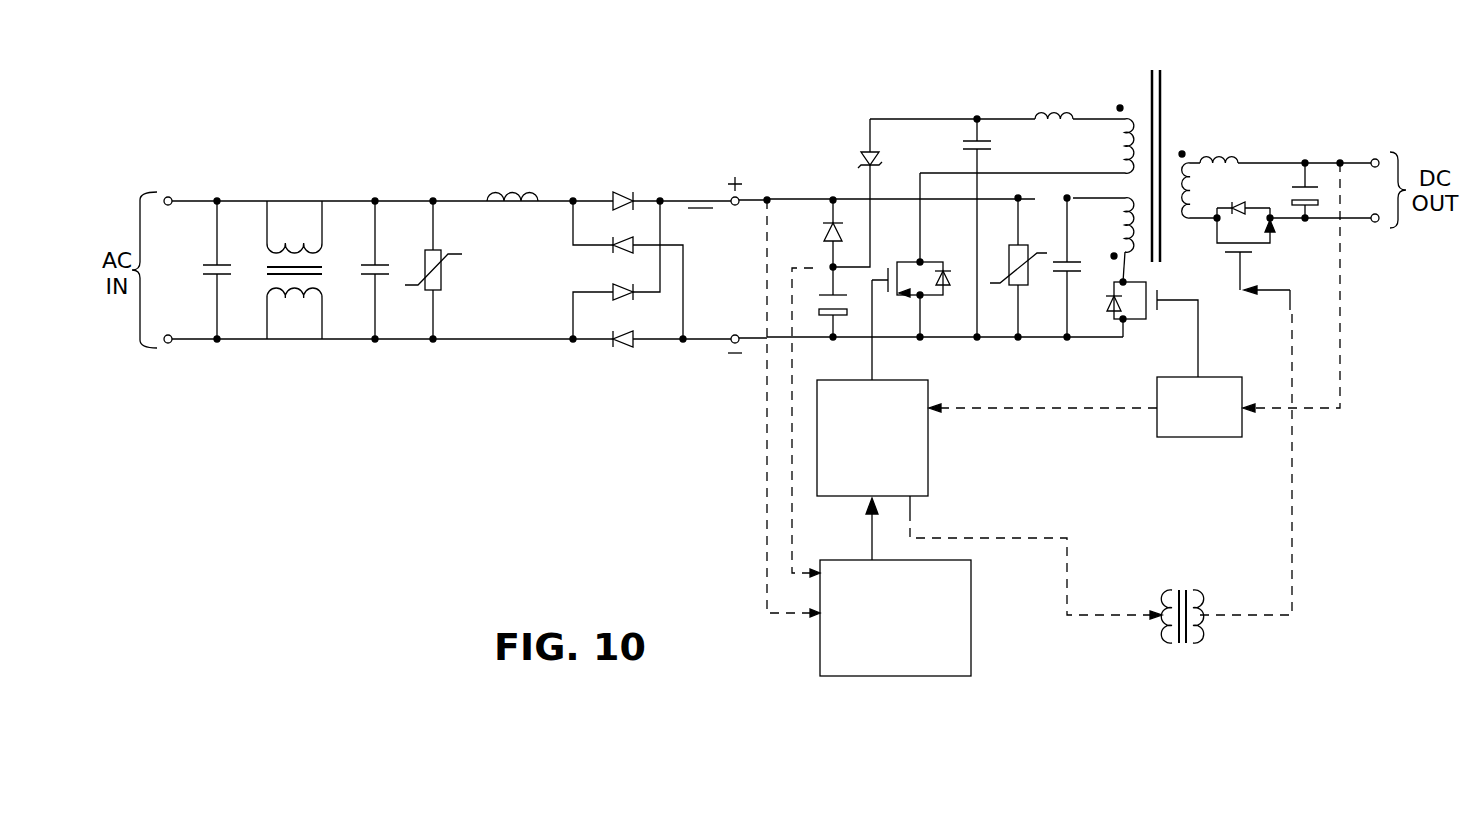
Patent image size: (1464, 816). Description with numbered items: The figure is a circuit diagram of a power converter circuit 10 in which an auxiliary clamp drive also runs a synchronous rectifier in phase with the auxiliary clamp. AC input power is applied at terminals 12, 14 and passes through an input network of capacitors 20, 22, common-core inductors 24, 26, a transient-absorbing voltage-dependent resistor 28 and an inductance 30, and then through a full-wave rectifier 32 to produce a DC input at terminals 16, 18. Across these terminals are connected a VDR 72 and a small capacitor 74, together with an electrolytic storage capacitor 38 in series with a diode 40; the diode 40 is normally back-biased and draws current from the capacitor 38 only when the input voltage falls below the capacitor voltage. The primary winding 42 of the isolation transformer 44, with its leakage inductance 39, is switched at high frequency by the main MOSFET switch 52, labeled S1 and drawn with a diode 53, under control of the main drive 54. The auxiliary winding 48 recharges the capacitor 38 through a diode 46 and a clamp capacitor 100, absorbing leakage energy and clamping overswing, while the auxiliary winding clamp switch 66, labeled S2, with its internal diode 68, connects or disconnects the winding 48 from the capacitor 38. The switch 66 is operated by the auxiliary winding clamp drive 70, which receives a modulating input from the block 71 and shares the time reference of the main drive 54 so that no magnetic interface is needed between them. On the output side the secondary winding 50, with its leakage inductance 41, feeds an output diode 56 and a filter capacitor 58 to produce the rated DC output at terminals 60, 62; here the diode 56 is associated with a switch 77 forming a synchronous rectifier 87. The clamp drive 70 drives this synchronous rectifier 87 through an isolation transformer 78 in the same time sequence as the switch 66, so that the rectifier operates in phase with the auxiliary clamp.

The circuit 10 is at (886, 98).
The terminal 12 is at (169, 196).
The terminal 14 is at (168, 344).
The terminal 16 is at (735, 206).
The terminal 18 is at (735, 334).
The capacitor 20 is at (203, 273).
The capacitor 22 is at (365, 273).
The common-core inductor 24 is at (295, 237).
The common-core inductor 26 is at (295, 304).
The transient-absorbing voltage-dependent resistor 28 is at (445, 283).
The inductance 30 is at (512, 192).
The full-wave rectifier 32 is at (632, 183).
The storage capacitor 38 is at (822, 318).
The leakage inductance 39 is at (1059, 113).
The diode 40 is at (823, 233).
The leakage inductance 41 is at (1215, 158).
The primary winding 42 is at (1120, 208).
The isolation transformer 44 is at (1176, 66).
The diode 46 is at (882, 160).
The auxiliary winding 48 is at (1120, 130).
The secondary winding 50 is at (1196, 183).
The MOSFET switch 52 is at (1147, 320).
The body diode of main switch 53 is at (1110, 322).
The main drive 54 is at (1212, 438).
The diode 56 is at (1248, 207).
The capacitor 58 is at (1313, 185).
The terminal 60 is at (1378, 158).
The terminal 62 is at (1378, 223).
The auxiliary winding clamp switch 66 is at (908, 261).
The internal diode 68 is at (943, 266).
The auxiliary winding clamp drive 70 is at (930, 447).
The modulate aux clamp drive circuit 71 is at (968, 659).
The VDR 72 is at (1025, 291).
The small capacitor 74 is at (1072, 280).
The synchronous rectifier switch 77 is at (1262, 246).
The isolation transformer 78 is at (1183, 648).
The synchronous rectifier 87 is at (1244, 272).
The clamp capacitor 100 is at (990, 145).
The main switch S1 is at (1160, 296).
The auxiliary clamp switch S2 is at (930, 285).